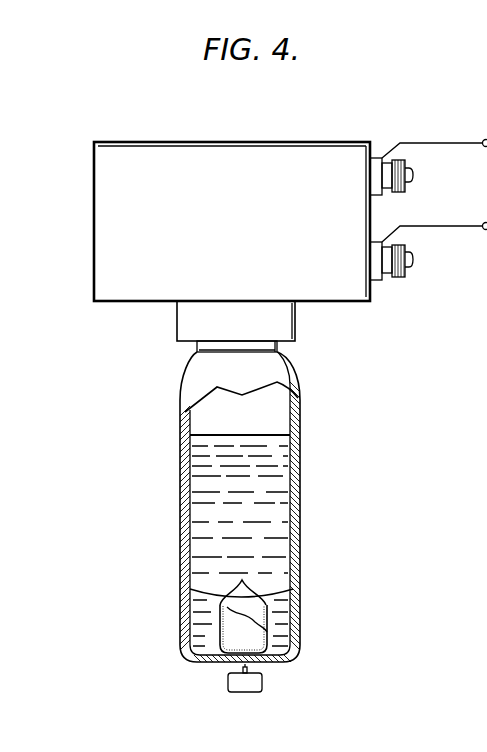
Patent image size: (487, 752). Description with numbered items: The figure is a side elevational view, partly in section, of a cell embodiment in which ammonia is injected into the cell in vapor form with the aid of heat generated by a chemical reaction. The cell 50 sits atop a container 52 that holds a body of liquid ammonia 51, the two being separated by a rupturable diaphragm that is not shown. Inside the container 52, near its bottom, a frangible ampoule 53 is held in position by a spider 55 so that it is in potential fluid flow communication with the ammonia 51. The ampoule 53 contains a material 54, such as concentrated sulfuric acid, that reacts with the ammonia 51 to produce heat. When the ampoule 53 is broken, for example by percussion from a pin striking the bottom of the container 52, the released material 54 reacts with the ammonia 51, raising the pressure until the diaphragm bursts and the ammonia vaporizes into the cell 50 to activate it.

The cell 50 is at (243, 222).
The ammonia 51 is at (263, 470).
The container 52 is at (197, 388).
The frangible ampoule 53 is at (260, 611).
The material 54 is at (243, 631).
The spider 55 is at (213, 597).